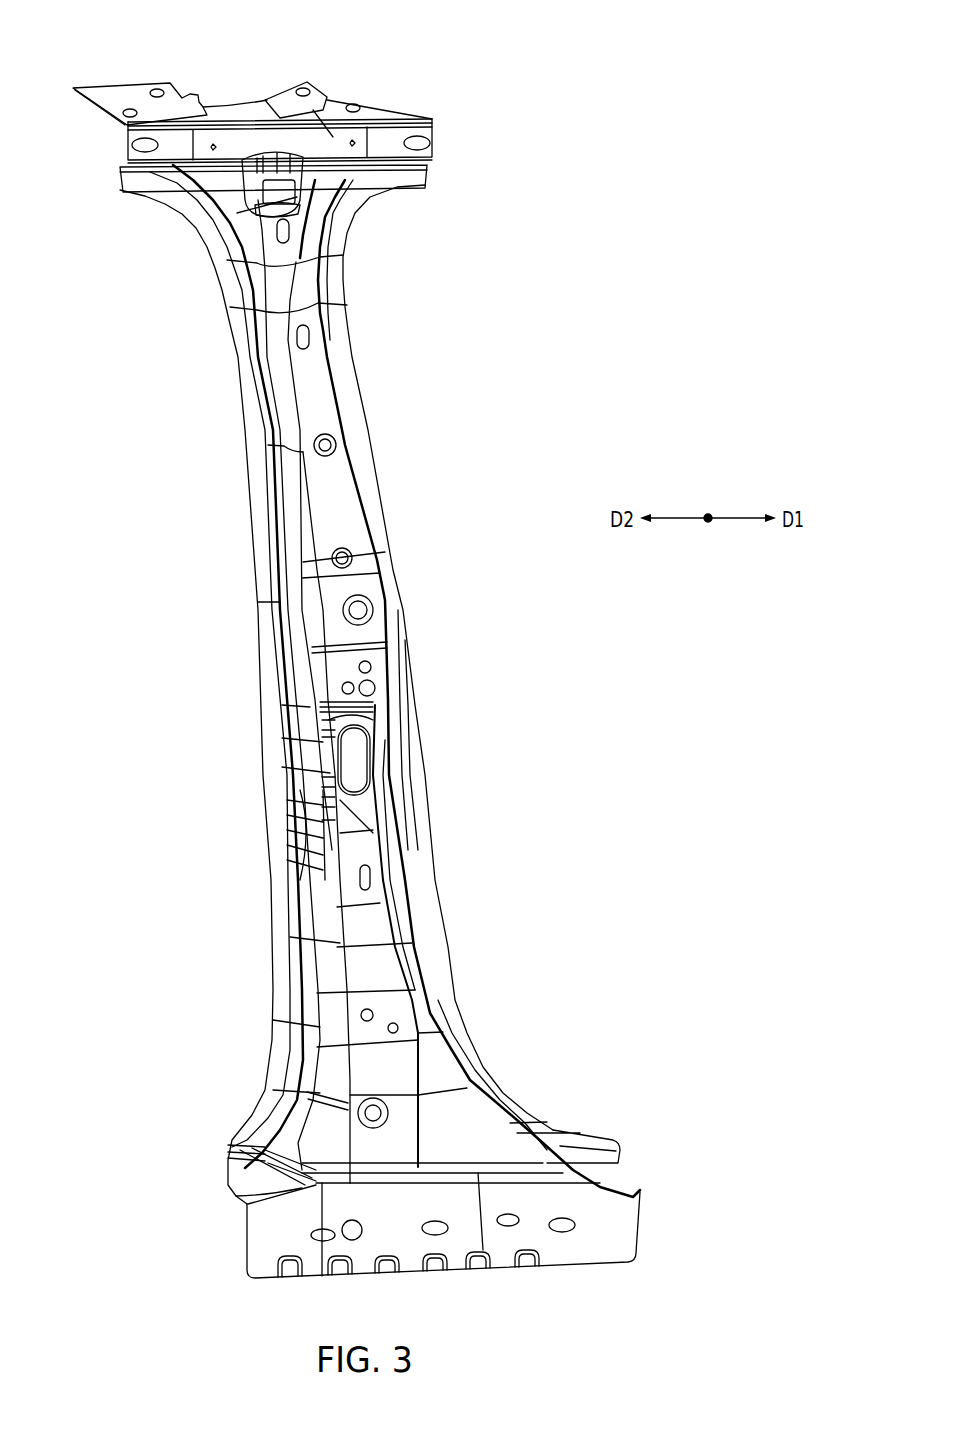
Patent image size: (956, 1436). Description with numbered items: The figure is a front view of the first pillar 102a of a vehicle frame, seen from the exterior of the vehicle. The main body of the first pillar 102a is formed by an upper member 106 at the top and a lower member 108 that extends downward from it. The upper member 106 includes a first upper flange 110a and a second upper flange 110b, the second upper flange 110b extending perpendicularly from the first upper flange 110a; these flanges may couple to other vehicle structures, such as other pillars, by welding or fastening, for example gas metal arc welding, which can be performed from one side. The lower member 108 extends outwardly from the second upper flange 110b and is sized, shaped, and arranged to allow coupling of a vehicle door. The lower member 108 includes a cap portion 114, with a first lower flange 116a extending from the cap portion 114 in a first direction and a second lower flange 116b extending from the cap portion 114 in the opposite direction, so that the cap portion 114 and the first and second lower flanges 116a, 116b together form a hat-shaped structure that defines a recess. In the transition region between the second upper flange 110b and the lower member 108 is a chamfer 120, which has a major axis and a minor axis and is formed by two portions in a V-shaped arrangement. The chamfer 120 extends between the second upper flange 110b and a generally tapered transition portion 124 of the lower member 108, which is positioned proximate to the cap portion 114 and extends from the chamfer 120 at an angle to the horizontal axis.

The first pillar 102a is at (372, 40).
The upper member 106 is at (417, 111).
The first upper flange 110a is at (393, 107).
The second upper flange 110b is at (433, 148).
The chamfer 120 is at (265, 150).
The transition portion 124 is at (297, 215).
The lower member 108 is at (381, 443).
The cap portion 114 is at (332, 413).
The first lower flange 116a is at (413, 499).
The second lower flange 116b is at (252, 513).